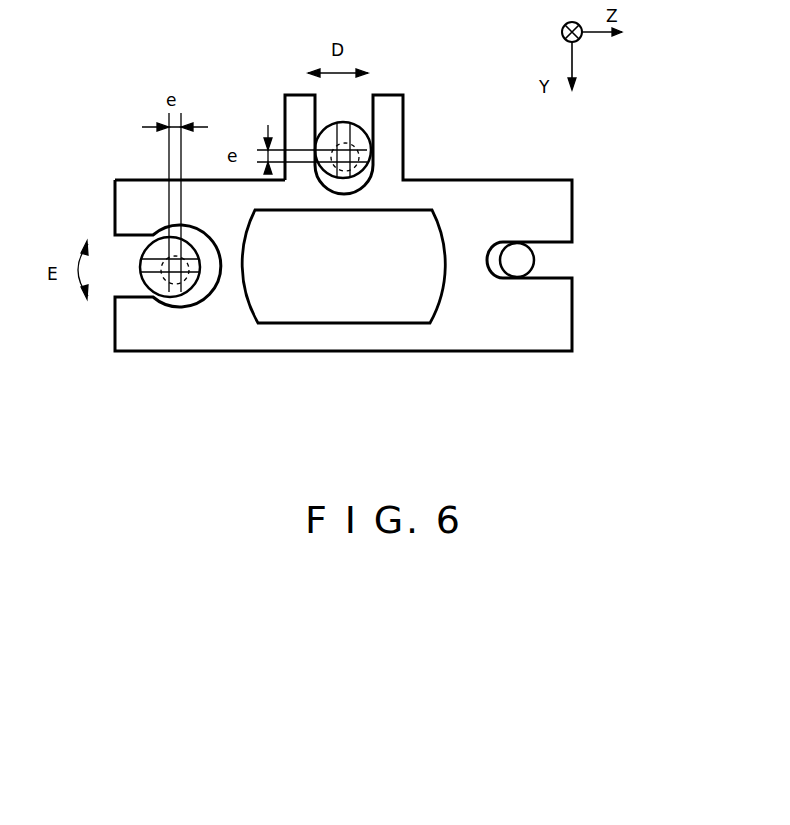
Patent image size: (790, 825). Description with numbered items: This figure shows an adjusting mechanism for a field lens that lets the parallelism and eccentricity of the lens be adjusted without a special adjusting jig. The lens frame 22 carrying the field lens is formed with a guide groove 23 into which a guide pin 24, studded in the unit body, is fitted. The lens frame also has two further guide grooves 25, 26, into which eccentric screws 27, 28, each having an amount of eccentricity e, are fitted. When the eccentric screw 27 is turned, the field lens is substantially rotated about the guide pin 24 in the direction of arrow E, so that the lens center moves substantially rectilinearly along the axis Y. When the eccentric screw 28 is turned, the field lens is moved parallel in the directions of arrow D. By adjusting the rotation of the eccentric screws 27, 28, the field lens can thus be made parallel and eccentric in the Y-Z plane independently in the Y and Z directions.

The lens barrel / body 22 is at (397, 313).
The guide groove 23 is at (551, 289).
The guide pin 24 is at (523, 257).
The guide groove 25 is at (137, 297).
The guide groove 26 is at (380, 108).
The eccentric screw 27 is at (175, 292).
The eccentric screw 28 is at (362, 137).